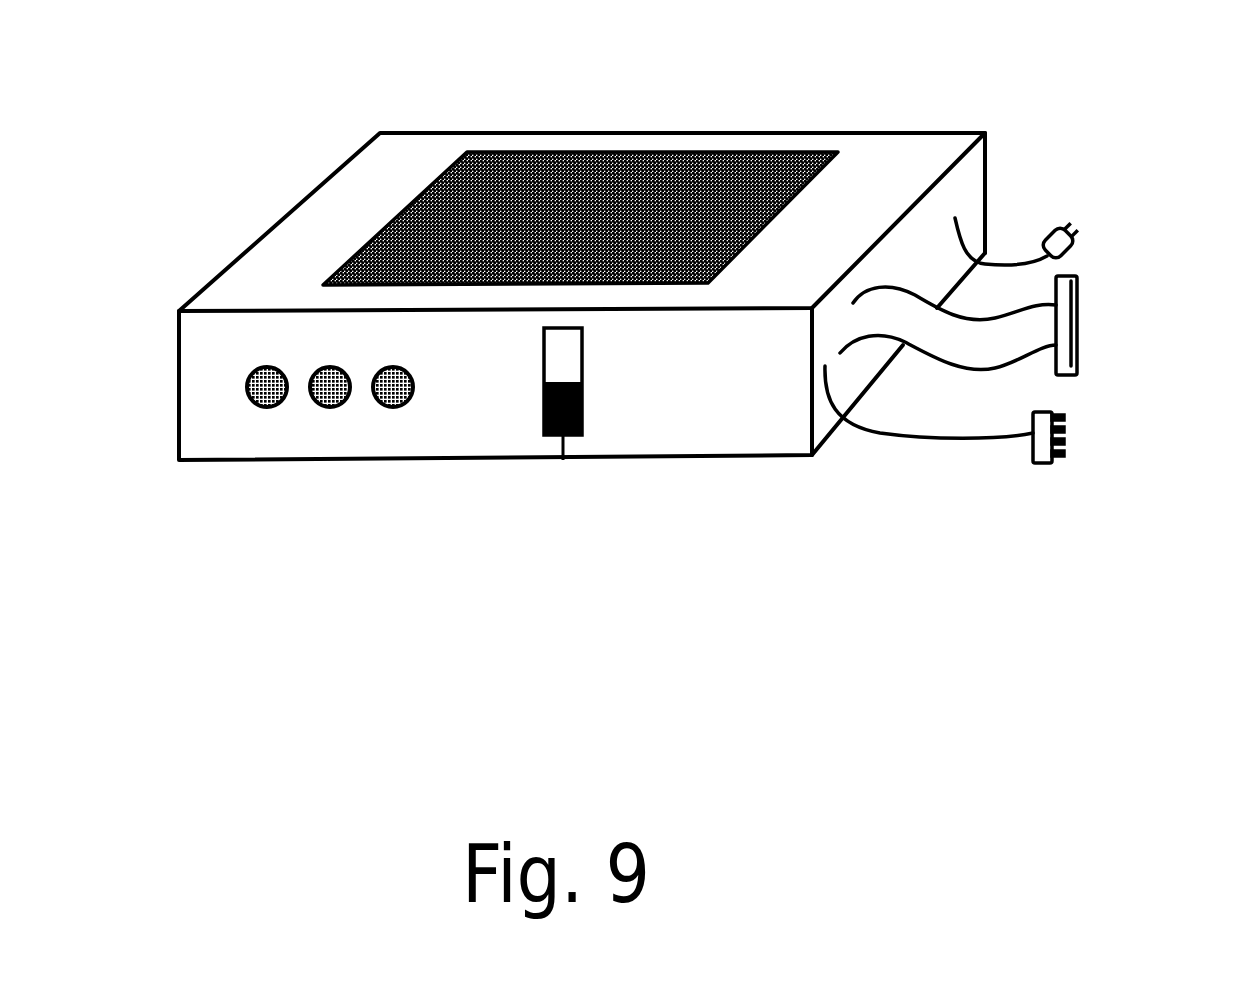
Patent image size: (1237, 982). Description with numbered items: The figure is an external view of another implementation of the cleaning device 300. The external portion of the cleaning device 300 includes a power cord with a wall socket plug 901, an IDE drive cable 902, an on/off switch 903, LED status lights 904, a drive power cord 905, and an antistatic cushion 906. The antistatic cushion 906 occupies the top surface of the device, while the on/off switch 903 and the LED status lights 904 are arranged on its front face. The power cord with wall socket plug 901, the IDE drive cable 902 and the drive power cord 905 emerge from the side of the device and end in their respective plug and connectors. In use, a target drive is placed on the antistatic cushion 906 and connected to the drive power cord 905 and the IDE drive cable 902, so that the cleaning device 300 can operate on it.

The cleaning device 300 is at (292, 83).
The power cord with a wall socket plug 901 is at (1051, 224).
The IDE drive cable 902 is at (1077, 313).
The on/off switch 903 is at (563, 460).
The LED status lights 904 is at (333, 427).
The drive power cord 905 is at (1068, 436).
The antistatic cushion 906 is at (677, 151).